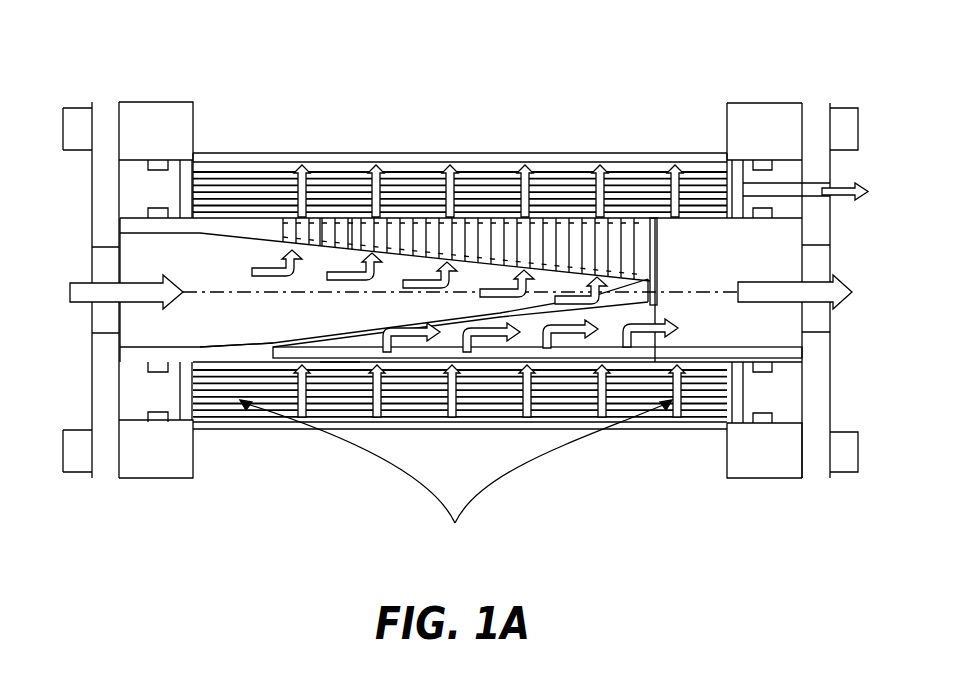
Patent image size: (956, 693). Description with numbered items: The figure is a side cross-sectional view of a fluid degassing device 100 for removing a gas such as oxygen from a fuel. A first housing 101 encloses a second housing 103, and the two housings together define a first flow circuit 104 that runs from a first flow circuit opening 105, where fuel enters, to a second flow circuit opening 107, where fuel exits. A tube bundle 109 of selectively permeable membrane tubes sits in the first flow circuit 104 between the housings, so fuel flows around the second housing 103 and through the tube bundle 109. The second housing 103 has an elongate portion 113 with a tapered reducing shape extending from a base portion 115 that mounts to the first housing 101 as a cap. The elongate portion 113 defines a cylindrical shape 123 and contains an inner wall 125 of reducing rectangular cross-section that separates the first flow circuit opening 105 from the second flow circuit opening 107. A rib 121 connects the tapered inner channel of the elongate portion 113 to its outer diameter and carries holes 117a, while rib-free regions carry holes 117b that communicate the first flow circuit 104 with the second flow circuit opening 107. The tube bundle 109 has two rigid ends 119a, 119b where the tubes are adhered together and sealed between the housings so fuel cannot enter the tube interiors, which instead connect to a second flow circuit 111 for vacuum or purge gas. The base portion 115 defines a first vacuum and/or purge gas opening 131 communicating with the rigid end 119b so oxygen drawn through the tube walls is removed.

The fluid degassing device 100 is at (320, 68).
The first housing 101 is at (572, 155).
The second housing 103 is at (185, 353).
The first flow circuit 104 is at (215, 265).
The first flow circuit opening 105 is at (103, 315).
The second flow circuit opening 107 is at (785, 343).
The tube bundle 109 is at (277, 185).
The second flow circuit 111 is at (733, 180).
The elongate portion 113 is at (510, 228).
The base portion 115 is at (103, 200).
The holes 117a is at (347, 230).
The holes 117b is at (350, 363).
The rigid end 119a is at (213, 162).
The rigid end 119b is at (703, 162).
The rib 121 is at (640, 237).
The cylindrical shape 123 is at (665, 218).
The inner wall 125 is at (240, 341).
The first vacuum and/or purge gas opening 131 is at (808, 190).